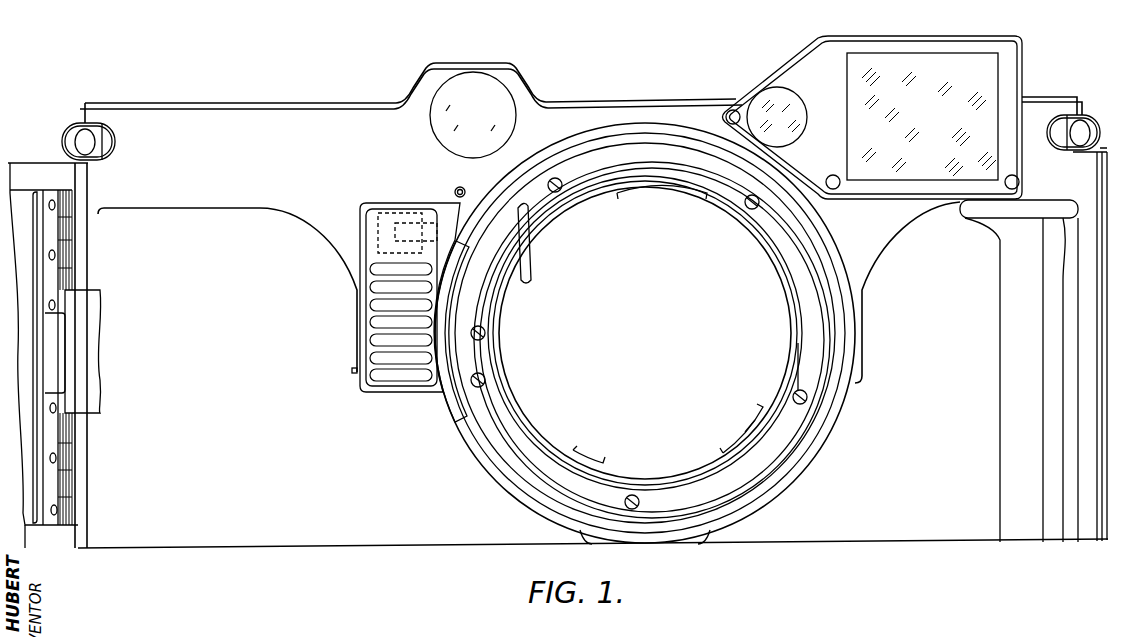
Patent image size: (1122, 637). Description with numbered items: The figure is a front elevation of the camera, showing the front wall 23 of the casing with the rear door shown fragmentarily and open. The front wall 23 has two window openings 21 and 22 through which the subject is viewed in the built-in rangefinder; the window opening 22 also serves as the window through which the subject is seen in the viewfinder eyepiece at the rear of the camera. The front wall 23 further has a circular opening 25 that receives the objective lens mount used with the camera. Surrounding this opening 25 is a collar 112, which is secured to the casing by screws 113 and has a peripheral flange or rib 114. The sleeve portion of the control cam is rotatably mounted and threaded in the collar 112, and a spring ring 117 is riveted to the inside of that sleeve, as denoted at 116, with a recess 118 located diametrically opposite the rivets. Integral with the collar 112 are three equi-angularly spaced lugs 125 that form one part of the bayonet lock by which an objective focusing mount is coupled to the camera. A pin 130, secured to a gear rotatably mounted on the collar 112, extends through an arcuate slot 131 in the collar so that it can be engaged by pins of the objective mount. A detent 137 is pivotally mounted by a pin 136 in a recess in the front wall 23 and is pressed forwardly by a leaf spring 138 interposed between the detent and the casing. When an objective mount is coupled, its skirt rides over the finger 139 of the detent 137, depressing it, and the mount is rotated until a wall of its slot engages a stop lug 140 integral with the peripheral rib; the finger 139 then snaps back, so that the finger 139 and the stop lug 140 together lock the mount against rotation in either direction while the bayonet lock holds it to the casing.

The window opening 21 is at (470, 83).
The window opening 22 is at (928, 70).
The front wall 23 is at (995, 371).
The circular opening 25 is at (550, 412).
The collar 112 is at (770, 447).
The screws 113 is at (793, 395).
The peripheral flange or rib 114 is at (813, 413).
The rivets 116 is at (545, 228).
The spring ring 117 is at (548, 224).
The recess 118 is at (750, 427).
The lugs 125 is at (691, 178).
The pin 130 is at (485, 333).
The arcuate slot 131 is at (485, 262).
The pin 136 is at (353, 373).
The detent 137 is at (400, 212).
The leaf spring 138 is at (383, 212).
The finger 139 is at (460, 220).
The stop lug 140 is at (460, 413).